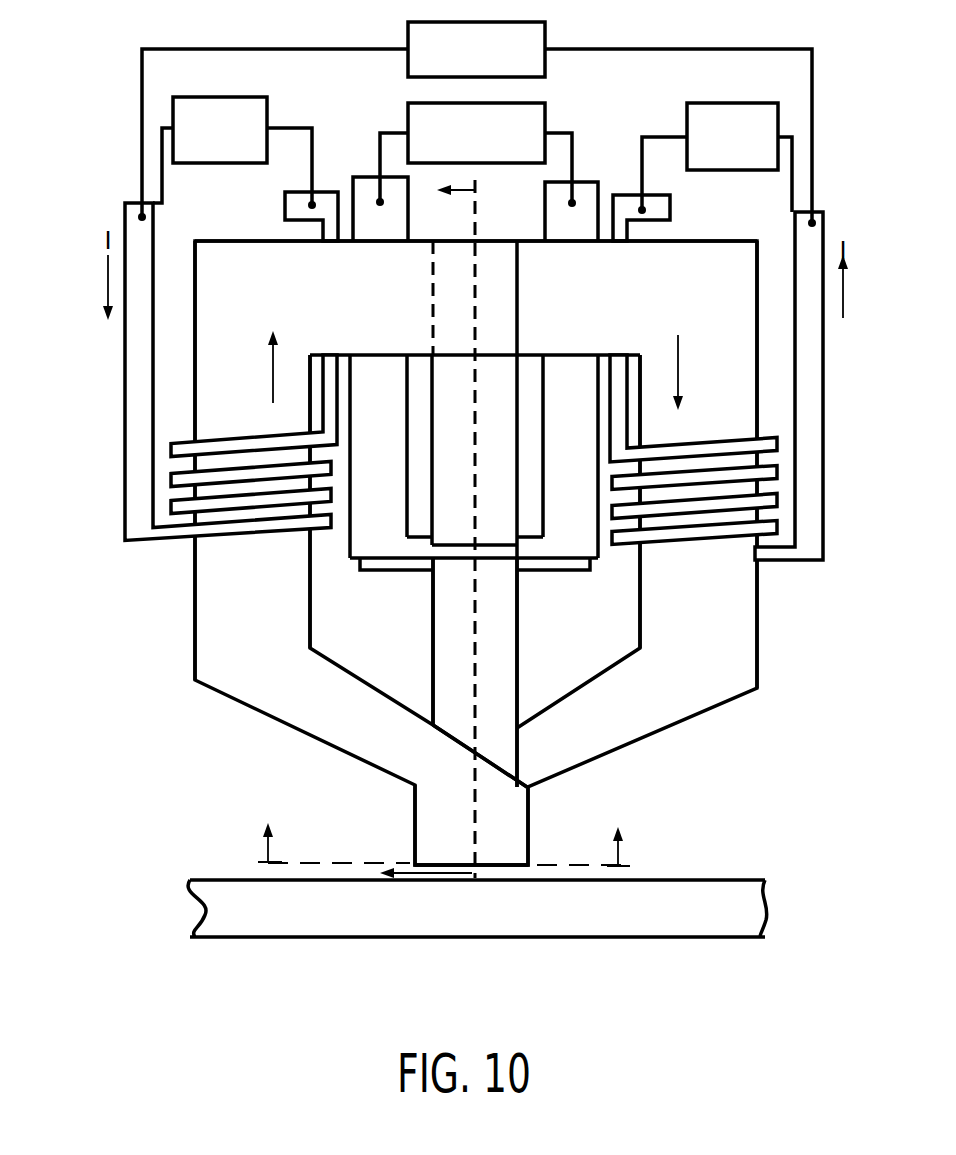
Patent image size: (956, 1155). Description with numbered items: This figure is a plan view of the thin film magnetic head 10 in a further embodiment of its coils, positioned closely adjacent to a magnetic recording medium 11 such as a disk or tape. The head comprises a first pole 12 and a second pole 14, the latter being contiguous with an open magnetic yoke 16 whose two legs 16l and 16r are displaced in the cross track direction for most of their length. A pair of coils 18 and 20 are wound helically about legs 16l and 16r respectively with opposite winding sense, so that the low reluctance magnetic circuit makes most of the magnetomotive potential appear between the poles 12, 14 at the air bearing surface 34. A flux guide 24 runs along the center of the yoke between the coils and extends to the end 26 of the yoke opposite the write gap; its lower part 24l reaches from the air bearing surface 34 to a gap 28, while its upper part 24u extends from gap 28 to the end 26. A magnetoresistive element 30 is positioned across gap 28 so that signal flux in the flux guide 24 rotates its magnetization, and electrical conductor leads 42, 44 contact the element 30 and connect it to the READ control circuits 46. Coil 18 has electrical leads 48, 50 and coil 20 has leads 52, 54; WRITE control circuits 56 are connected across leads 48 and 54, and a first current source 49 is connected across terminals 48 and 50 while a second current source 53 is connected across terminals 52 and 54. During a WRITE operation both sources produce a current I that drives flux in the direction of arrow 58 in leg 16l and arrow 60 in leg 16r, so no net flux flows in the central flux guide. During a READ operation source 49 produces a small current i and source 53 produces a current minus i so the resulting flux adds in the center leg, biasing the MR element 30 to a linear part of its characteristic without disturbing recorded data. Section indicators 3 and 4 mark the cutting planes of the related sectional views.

The thin film magnetic head 10 is at (145, 595).
The magnetic recording medium 11 is at (662, 898).
The first pole 12 is at (537, 767).
The second pole 14 is at (435, 816).
The magnetic yoke 16 is at (216, 653).
The left leg of magnetic yoke 16l is at (262, 595).
The right leg of magnetic yoke 16r is at (712, 597).
The coil 18 is at (258, 440).
The coil 20 is at (690, 448).
The flux guide 24 is at (500, 686).
The upper part of flux guide 24u is at (450, 398).
The lower part of flux guide 24l is at (433, 638).
The end of yoke 26 is at (505, 306).
The gap 28 is at (440, 556).
The magnetoresistive element 30 is at (530, 572).
The air bearing surface 34 is at (500, 868).
The electrical conductor lead 42 is at (395, 220).
The electrical conductor lead 44 is at (560, 222).
The READ control circuits 46 is at (408, 113).
The electrical lead 48 is at (150, 232).
The first current source 49 is at (250, 108).
The electrical lead 50 is at (284, 206).
The electrical lead 52 is at (672, 212).
The second current source 53 is at (707, 112).
The electrical lead 54 is at (797, 242).
The WRITE control circuits 56 is at (545, 36).
The arrow 58 is at (272, 378).
The arrow 60 is at (679, 352).
The section line 3- 3 is at (444, 828).
The section line 4- 4 is at (416, 531).